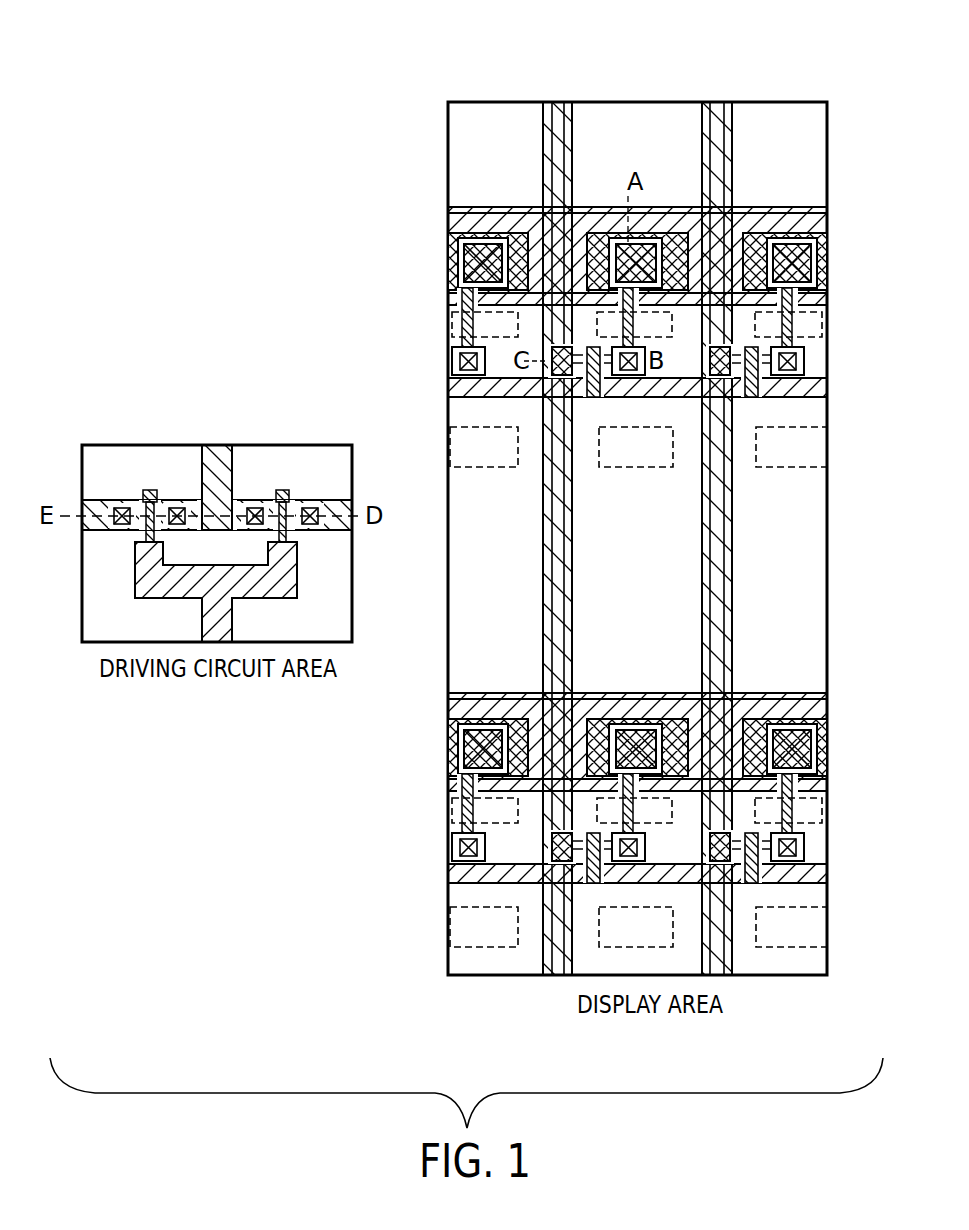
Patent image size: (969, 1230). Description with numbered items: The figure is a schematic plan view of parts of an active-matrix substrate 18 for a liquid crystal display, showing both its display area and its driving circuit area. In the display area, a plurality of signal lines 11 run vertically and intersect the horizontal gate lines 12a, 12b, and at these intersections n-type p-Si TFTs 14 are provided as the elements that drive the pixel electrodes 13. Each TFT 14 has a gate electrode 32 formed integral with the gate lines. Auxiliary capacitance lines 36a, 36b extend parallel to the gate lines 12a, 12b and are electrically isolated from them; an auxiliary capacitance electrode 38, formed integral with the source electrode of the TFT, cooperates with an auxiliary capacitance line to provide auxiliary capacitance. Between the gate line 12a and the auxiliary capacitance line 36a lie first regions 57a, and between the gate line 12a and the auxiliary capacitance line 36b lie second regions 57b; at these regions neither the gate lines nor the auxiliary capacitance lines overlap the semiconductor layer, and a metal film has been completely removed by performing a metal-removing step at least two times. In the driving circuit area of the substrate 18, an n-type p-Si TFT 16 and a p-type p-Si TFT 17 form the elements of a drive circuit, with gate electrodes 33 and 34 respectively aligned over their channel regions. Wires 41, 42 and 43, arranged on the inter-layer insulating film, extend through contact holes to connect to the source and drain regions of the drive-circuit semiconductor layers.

The active-matrix substrate 18 is at (418, 65).
The signal line 11 is at (557, 102).
The pixel electrode 13 is at (568, 558).
The n-type p-Si TFT 14 is at (583, 374).
The auxiliary capacitance electrode 38 is at (683, 245).
The auxiliary capacitance line 36a is at (830, 223).
The auxiliary capacitance line 36b is at (830, 709).
The gate line 12a is at (830, 384).
The gate line 12b is at (830, 870).
The first region 57a is at (450, 323).
The second region 57b is at (490, 469).
The gate electrode 32 is at (604, 376).
The p-type p-Si TFT 17 is at (137, 486).
The n-type p-Si TFT 16 is at (298, 487).
The wire 42 is at (235, 500).
The gate electrode 34 is at (148, 490).
The gate electrode 33 is at (283, 490).
The wire 43 is at (92, 533).
The wire 41 is at (337, 533).